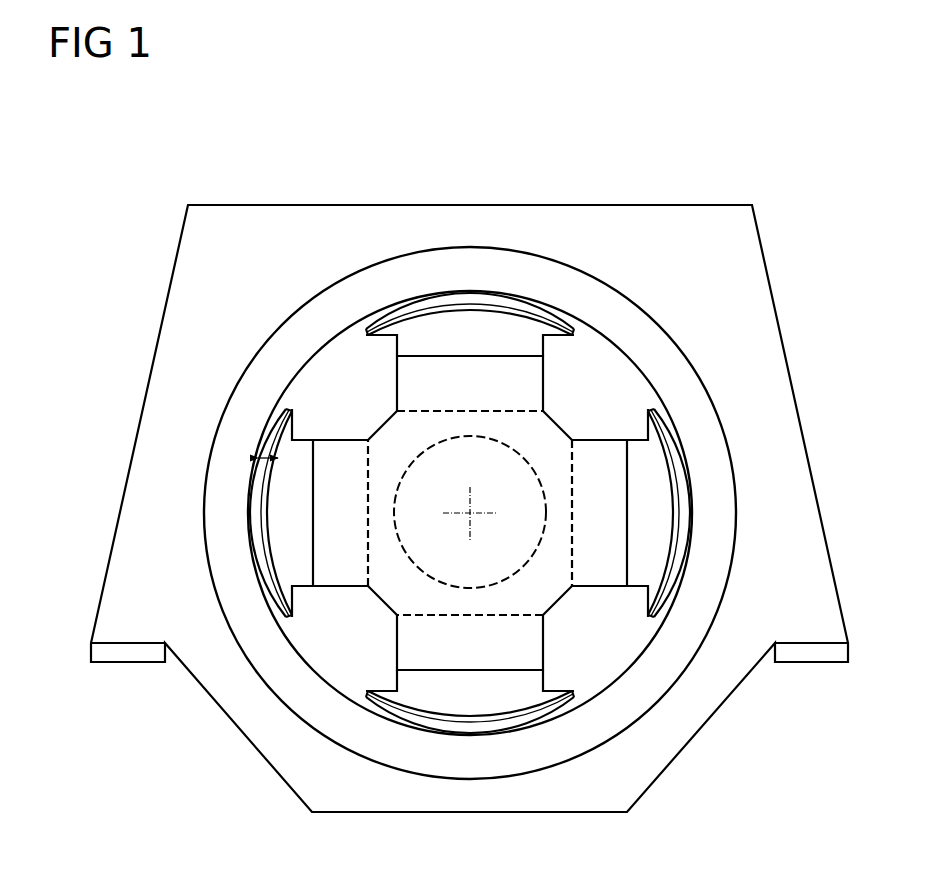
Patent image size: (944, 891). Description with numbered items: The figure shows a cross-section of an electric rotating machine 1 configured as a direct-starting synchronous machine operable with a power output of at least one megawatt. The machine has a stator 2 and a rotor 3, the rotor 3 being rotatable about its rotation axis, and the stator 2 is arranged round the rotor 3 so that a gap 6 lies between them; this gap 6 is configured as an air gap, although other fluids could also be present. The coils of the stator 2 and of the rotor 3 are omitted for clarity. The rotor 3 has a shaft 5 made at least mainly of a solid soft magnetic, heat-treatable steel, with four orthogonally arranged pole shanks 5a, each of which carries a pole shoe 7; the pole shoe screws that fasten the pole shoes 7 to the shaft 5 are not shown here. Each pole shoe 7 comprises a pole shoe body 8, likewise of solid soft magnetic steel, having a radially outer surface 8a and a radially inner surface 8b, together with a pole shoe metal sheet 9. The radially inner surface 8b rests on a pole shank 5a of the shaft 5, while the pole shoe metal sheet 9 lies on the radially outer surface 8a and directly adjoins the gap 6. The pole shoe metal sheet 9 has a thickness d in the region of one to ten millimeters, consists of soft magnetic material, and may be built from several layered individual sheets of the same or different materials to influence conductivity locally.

The electric rotating machine 1 is at (771, 166).
The stator 2 is at (712, 455).
The rotor 3 is at (546, 586).
The shaft 5 is at (543, 455).
The pole shank 5a is at (528, 381).
The gap 6 is at (305, 601).
The pole shoe 7 is at (418, 345).
The pole shoe body 8 is at (480, 509).
The radially outer surface 8a is at (410, 312).
The radially inner surface 8b is at (501, 355).
The pole shoe metal sheet 9 is at (468, 300).
The thickness d is at (250, 460).